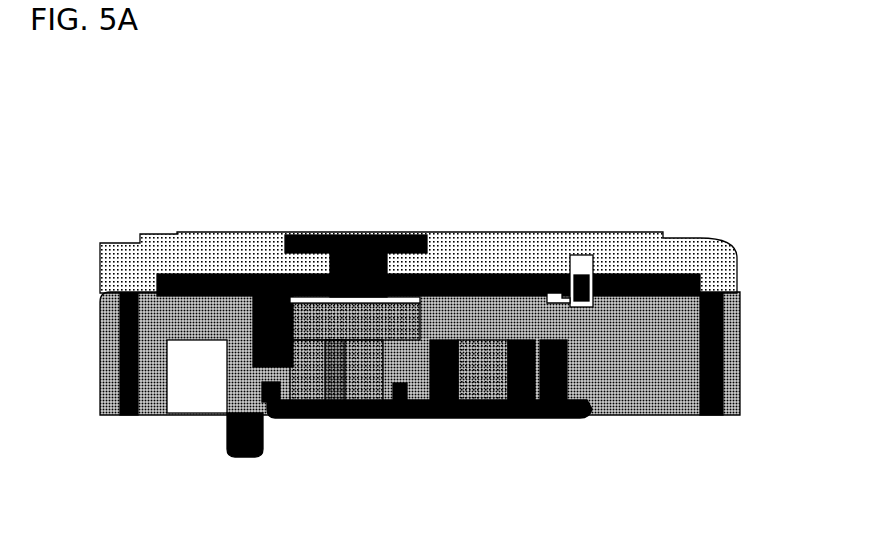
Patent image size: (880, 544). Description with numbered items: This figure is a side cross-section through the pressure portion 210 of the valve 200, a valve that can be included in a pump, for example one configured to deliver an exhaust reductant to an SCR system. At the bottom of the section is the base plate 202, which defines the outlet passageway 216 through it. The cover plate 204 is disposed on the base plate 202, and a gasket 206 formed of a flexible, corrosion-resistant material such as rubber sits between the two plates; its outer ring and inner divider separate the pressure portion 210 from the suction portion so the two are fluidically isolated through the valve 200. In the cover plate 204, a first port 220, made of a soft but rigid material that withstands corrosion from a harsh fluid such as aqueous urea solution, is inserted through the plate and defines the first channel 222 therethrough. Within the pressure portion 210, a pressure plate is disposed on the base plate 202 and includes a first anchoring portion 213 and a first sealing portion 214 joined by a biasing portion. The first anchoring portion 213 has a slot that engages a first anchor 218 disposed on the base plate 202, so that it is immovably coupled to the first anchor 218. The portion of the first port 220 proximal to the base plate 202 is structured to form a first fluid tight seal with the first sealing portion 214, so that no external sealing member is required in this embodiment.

The valve 200 is at (646, 118).
The pressure portion 210 is at (630, 191).
The base plate 202 is at (152, 369).
The cover plate 204 is at (140, 262).
The gasket 206 is at (157, 283).
The first anchoring portion 213 is at (562, 298).
The first sealing portion 214 is at (309, 295).
The outlet passageway 216 is at (325, 362).
The first anchor 218 is at (582, 280).
The first port 220 is at (418, 242).
The first channel 222 is at (353, 255).